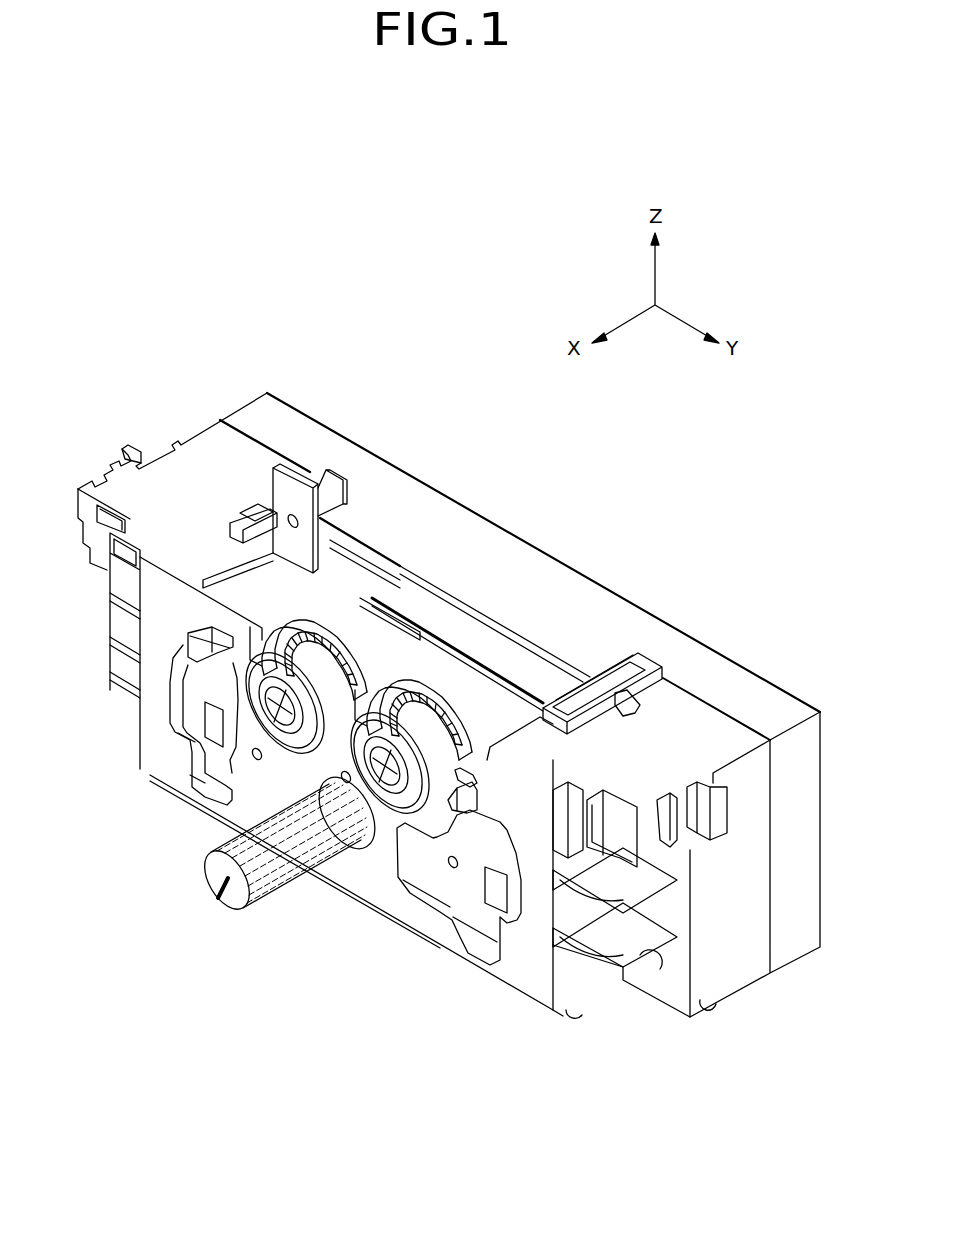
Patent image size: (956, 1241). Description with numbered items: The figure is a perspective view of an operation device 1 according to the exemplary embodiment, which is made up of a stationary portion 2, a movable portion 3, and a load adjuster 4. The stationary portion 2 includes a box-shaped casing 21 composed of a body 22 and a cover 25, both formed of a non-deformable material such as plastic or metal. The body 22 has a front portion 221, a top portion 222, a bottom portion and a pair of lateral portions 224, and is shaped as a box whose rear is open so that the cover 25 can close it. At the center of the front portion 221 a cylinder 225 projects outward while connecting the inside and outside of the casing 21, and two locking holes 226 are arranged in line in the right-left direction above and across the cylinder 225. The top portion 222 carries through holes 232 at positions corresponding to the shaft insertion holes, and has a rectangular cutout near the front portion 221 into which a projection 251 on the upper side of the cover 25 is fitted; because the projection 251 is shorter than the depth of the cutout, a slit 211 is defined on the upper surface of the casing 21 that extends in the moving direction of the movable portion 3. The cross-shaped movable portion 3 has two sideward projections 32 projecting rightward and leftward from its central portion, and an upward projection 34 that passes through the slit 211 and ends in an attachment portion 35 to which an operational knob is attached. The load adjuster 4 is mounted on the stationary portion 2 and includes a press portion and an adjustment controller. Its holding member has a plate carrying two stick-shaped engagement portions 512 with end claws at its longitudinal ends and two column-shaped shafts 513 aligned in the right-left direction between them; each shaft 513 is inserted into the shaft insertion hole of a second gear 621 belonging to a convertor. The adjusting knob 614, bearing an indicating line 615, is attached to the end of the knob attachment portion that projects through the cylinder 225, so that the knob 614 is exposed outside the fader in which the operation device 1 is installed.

The operation device 1 is at (187, 217).
The stationary portion 2 is at (153, 311).
The movable portion 3 is at (348, 509).
The load adjuster 4 is at (145, 897).
The casing 21 is at (228, 333).
The body 22 is at (175, 443).
The cover 25 is at (228, 413).
The sideward projections 32 is at (404, 590).
The upward projection 34 is at (347, 541).
The attachment portion 35 is at (288, 468).
The slit 211 is at (535, 669).
The front portion 221 is at (148, 788).
The top portion 222 is at (695, 713).
The lateral portions 224 is at (757, 982).
The cylinder 225 is at (337, 852).
The locking holes 226 is at (190, 666).
The through holes 232 is at (260, 627).
The projection 251 is at (588, 655).
The engagement portions 512 is at (187, 632).
The shafts 513 is at (250, 765).
The adjusting knob 614 is at (210, 866).
The indicating line 615 is at (230, 899).
The second gear 621 is at (410, 658).